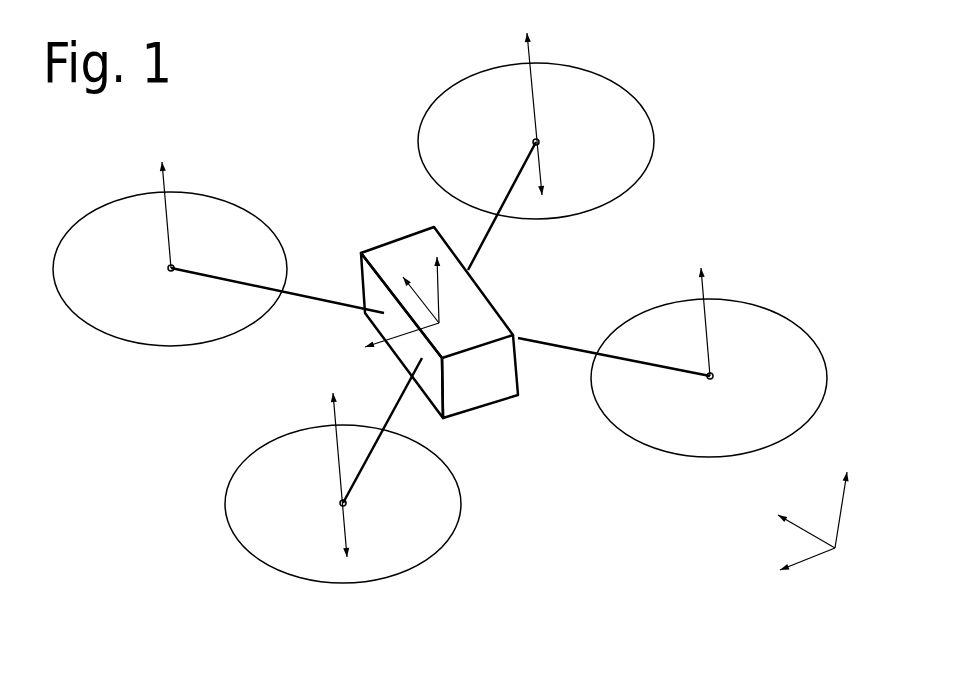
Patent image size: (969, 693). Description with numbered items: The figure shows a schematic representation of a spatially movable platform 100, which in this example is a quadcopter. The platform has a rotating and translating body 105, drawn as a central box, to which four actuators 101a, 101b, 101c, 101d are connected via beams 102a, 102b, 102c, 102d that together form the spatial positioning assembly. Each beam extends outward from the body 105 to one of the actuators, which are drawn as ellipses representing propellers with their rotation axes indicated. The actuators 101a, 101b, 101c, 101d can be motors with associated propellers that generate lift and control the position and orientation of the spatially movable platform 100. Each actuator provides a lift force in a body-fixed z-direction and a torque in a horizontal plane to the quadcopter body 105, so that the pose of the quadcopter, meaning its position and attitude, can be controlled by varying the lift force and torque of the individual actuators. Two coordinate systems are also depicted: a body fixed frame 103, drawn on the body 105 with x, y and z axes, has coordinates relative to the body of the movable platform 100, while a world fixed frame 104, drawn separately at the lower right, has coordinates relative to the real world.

The spatially movable platform 100 is at (380, 230).
The actuator 101a is at (536, 142).
The actuator 101b is at (710, 376).
The actuator 101c is at (343, 503).
The actuator 101d is at (171, 268).
The beam 102a is at (492, 240).
The beam 102b is at (587, 342).
The beam 102c is at (400, 407).
The beam 102d is at (322, 297).
The body fixed frame 103 is at (455, 335).
The world fixed frame 104 is at (840, 565).
The body 105 is at (478, 325).